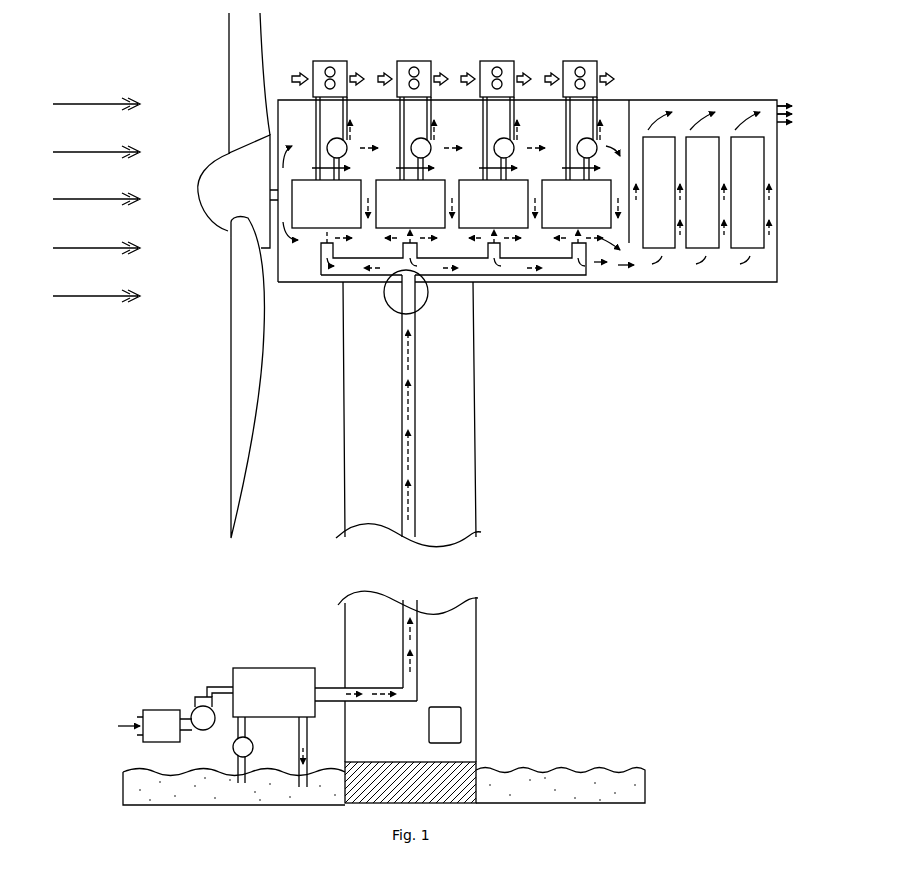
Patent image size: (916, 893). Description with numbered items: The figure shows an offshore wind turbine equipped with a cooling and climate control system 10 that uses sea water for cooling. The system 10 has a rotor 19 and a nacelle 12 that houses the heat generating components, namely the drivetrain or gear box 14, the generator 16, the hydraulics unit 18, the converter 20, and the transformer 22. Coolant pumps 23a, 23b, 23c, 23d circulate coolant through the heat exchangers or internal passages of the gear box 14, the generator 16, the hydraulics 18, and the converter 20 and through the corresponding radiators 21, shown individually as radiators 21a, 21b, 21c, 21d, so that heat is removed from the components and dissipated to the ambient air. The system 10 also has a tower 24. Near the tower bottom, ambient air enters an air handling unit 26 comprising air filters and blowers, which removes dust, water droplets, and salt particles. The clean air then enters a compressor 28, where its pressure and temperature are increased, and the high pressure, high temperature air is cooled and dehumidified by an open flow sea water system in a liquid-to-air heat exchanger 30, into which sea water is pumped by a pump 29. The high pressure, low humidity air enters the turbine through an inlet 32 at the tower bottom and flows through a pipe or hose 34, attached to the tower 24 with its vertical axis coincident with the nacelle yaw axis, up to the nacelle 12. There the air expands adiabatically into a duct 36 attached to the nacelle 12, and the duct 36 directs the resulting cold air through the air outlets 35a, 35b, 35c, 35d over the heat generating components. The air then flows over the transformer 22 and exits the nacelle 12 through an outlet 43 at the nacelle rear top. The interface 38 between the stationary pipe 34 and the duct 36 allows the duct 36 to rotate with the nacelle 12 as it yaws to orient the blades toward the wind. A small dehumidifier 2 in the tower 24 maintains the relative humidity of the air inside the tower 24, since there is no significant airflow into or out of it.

The cooling and climate control system 10 is at (893, 56).
The dehumidifier 2 is at (447, 706).
The nacelle 12 is at (618, 98).
The drivetrain 14 is at (359, 180).
The generator 16 is at (443, 180).
The hydraulics unit 18 is at (526, 180).
The rotor 19 is at (222, 160).
The converter 20 is at (609, 180).
The radiators 21 is at (575, 60).
The radiator 21a is at (326, 70).
The radiator 21b is at (409, 70).
The radiator 21c is at (488, 70).
The radiator 21d is at (586, 70).
The transformer 22 is at (745, 137).
The coolant pump 23a is at (328, 141).
The coolant pump 23b is at (412, 141).
The coolant pump 23c is at (495, 141).
The coolant pump 23d is at (578, 141).
The tower 24 is at (478, 735).
The air handling unit 26 is at (157, 714).
The compressor 28 is at (203, 703).
The pump 29 is at (232, 752).
The liquid-to-air heat exchanger 30 is at (276, 668).
The inlet 32 is at (348, 701).
The pipe 34 is at (417, 478).
The air outlet 35a is at (314, 248).
The air outlet 35b is at (396, 248).
The air outlet 35c is at (481, 248).
The air outlet 35d is at (565, 248).
The duct 36 is at (440, 275).
The interface 38 is at (388, 303).
The outlet 43 is at (803, 117).